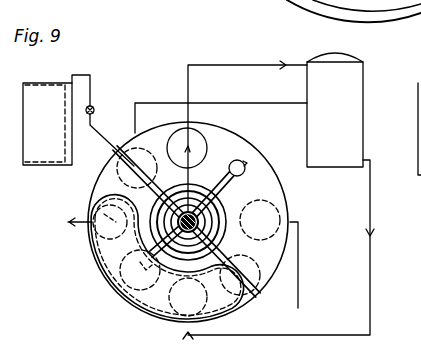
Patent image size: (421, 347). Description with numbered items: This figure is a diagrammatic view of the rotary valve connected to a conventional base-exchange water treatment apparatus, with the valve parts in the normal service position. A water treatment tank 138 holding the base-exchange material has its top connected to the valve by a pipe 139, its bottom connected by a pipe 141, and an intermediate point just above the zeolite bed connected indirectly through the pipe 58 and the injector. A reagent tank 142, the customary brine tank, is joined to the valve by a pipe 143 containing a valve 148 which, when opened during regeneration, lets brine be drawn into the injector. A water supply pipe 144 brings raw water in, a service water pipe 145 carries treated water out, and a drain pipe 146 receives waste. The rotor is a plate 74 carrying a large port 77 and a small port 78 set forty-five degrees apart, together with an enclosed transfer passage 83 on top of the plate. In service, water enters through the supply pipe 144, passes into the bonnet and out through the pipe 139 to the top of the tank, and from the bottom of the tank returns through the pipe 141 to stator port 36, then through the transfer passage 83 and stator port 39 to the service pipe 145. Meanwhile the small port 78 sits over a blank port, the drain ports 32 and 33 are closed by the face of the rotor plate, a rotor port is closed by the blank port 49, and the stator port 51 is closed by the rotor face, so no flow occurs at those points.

The reagent tank 142 is at (47, 124).
The pipe 143 is at (91, 86).
The valve 148 is at (95, 110).
The pipe 58 is at (151, 101).
The pipe 139 is at (228, 65).
The water treatment tank 138 is at (335, 110).
The pipe 141 is at (371, 272).
The drain pipe 146 is at (299, 267).
The large port 77 is at (210, 128).
The plate 74 is at (236, 137).
The water supply pipe 144 is at (270, 146).
The small port 78 is at (246, 171).
The drain port 32 is at (281, 215).
The drain port 33 is at (259, 292).
The stator port 51 is at (93, 176).
The stator port 39 is at (93, 214).
The service water pipe 145 is at (82, 226).
The transfer passage 83 is at (113, 257).
The blank port 49 is at (121, 295).
The stator port 36 is at (157, 317).